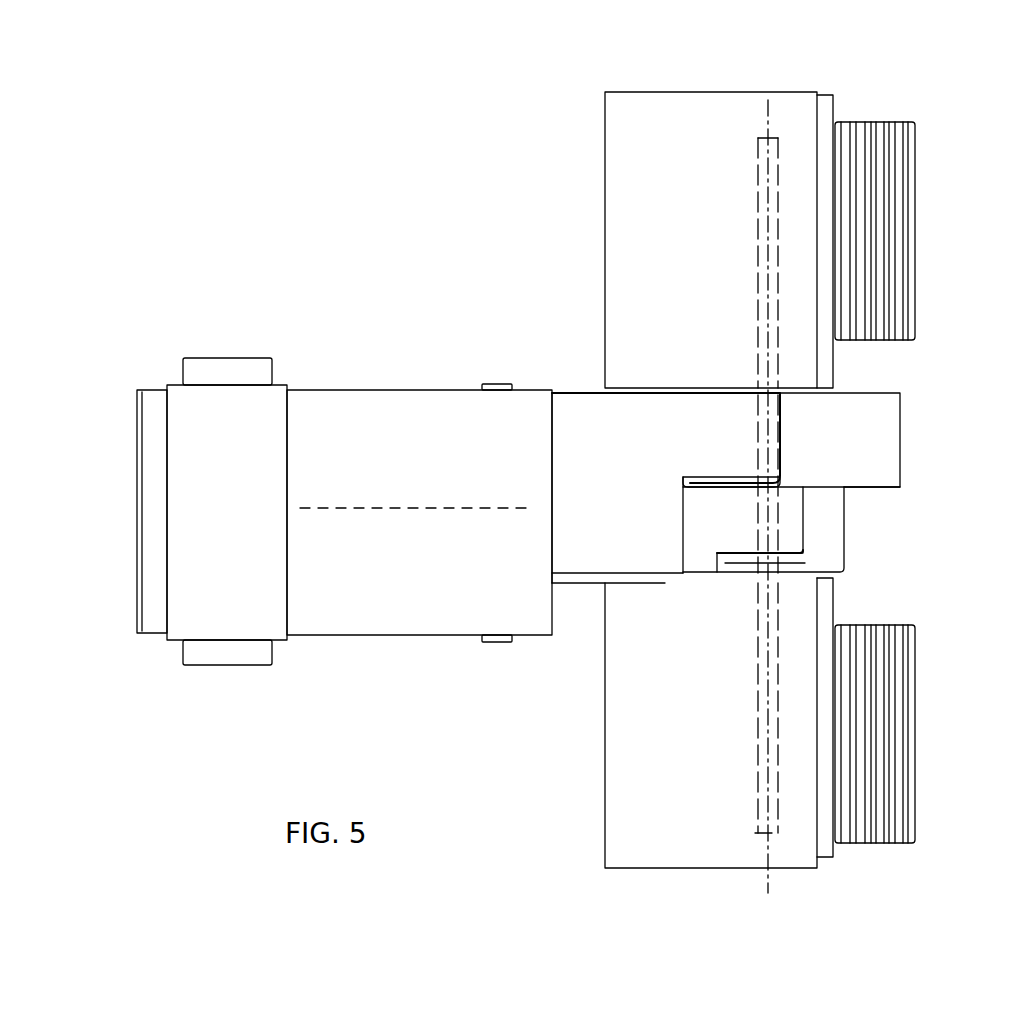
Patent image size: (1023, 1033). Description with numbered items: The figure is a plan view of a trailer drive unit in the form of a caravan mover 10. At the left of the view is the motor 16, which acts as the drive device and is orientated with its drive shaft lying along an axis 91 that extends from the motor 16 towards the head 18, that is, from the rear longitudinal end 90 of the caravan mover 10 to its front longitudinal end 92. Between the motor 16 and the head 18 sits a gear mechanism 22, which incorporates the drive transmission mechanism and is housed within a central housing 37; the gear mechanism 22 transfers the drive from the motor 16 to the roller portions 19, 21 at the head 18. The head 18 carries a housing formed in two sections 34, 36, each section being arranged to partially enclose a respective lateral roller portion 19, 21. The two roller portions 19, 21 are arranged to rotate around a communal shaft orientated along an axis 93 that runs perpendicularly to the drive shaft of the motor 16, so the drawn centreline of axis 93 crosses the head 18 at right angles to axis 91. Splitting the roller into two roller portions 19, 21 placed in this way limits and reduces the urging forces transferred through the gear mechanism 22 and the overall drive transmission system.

The caravan mover 10 is at (380, 174).
The motor 16 is at (387, 607).
The head 18 is at (625, 898).
The roller portion 19 is at (900, 132).
The roller portion 21 is at (873, 843).
The gear mechanism 22 is at (663, 432).
The housing section 34 is at (638, 128).
The housing section 36 is at (634, 830).
The central housing 37 is at (887, 423).
The rear longitudinal end 90 is at (140, 652).
The axis 91 is at (377, 508).
The front longitudinal end 92 is at (915, 862).
The axis 93 is at (772, 136).